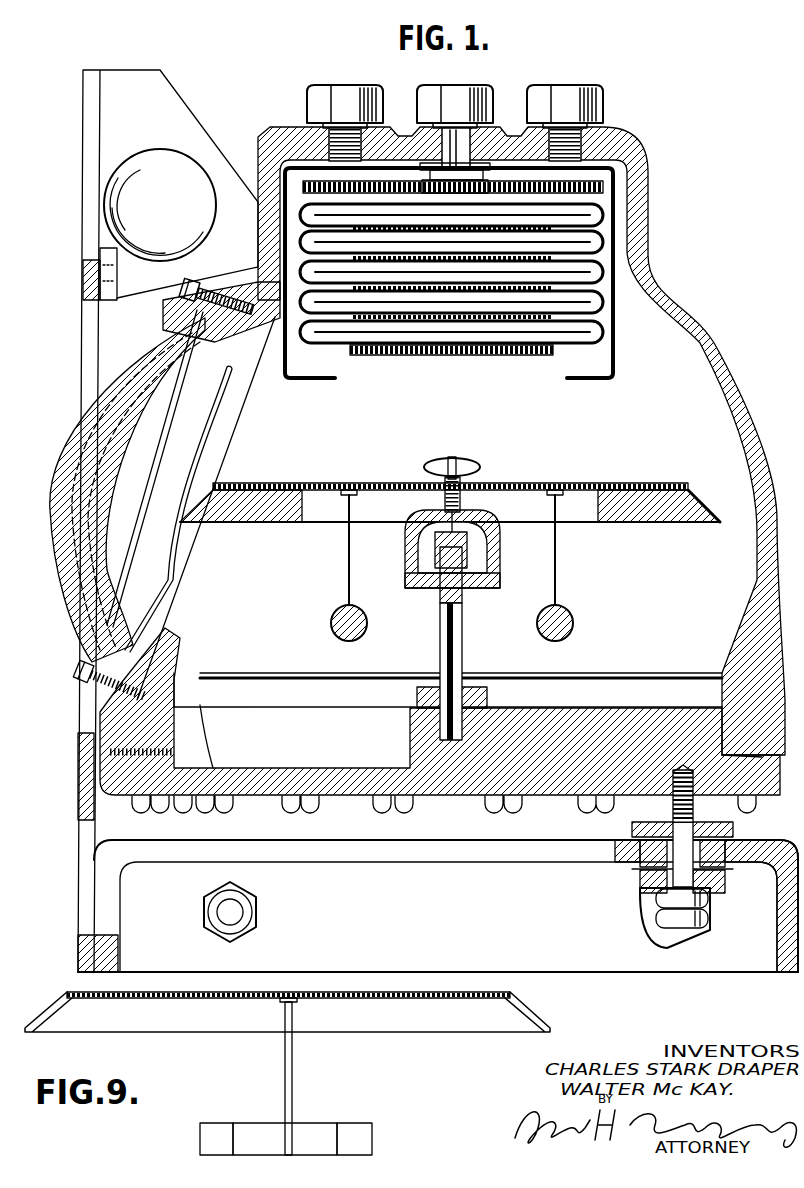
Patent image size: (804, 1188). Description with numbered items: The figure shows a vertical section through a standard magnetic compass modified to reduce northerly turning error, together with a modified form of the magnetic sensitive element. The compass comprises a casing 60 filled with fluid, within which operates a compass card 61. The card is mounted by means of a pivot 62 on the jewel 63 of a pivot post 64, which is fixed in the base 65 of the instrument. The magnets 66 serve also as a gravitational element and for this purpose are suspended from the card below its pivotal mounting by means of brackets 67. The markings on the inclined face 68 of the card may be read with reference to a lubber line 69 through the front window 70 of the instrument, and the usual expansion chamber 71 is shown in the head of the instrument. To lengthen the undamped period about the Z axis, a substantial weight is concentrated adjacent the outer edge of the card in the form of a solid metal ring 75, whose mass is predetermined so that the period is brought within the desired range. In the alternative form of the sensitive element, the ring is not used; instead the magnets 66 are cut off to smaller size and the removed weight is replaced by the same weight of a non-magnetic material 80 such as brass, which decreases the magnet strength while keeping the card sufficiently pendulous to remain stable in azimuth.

In FIG. 1, the casing 60 is at (702, 335).
In FIG. 1, the compass card 61 is at (583, 483).
In FIG. 9, the compass card 61 is at (67, 993).
In FIG. 1, the pivot 62 is at (466, 457).
In FIG. 1, the jewel 63 is at (437, 547).
In FIG. 1, the pivot post 64 is at (462, 637).
In FIG. 1, the base 65 is at (533, 717).
In FIG. 1, the magnets 66 is at (330, 624).
In FIG. 9, the magnets 66 is at (252, 1130).
In FIG. 1, the brackets 67 is at (345, 567).
In FIG. 9, the brackets 67 is at (293, 1077).
In FIG. 1, the inclined face 68 is at (700, 498).
In FIG. 9, the inclined face 68 is at (530, 1005).
In FIG. 1, the lubber line 69 is at (186, 448).
In FIG. 1, the front window 70 is at (78, 434).
In FIG. 1, the expansion chamber 71 is at (448, 350).
In FIG. 1, the solid metal ring 75 is at (665, 517).
In FIG. 9, the non-magnetic material 80 is at (210, 1133).